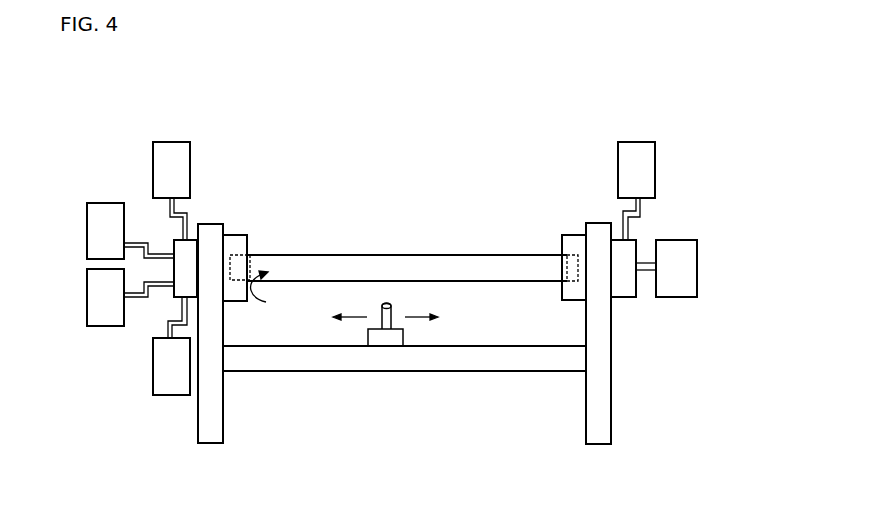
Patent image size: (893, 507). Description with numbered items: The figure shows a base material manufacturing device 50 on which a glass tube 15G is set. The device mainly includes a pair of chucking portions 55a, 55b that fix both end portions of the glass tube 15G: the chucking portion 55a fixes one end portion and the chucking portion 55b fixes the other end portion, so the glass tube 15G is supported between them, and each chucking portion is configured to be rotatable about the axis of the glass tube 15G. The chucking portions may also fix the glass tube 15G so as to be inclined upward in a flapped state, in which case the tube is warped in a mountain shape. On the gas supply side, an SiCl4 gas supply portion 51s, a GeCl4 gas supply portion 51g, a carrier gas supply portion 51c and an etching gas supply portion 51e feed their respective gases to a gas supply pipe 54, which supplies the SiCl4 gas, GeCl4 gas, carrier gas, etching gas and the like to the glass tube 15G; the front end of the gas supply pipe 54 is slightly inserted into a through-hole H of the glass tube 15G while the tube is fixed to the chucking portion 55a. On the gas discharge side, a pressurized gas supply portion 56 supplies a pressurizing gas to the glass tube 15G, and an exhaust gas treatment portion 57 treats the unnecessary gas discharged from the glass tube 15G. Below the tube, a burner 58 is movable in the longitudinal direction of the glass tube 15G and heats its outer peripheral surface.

The base material manufacturing device 50 is at (640, 102).
The glass tube 15G is at (327, 262).
The etching gas supply portion 51e is at (172, 151).
The SiCl4 gas supply portion 51s is at (105, 208).
The GeCl4 gas supply portion 51g is at (103, 318).
The carrier gas supply portion 51c is at (173, 387).
The gas supply pipe 54 is at (250, 257).
The chucking portion 55a is at (235, 240).
The chucking portion 55b is at (573, 239).
The pressurized gas supply portion 56 is at (640, 150).
The exhaust gas treatment portion 57 is at (672, 247).
The burner 58 is at (385, 325).
The through-hole H is at (266, 294).